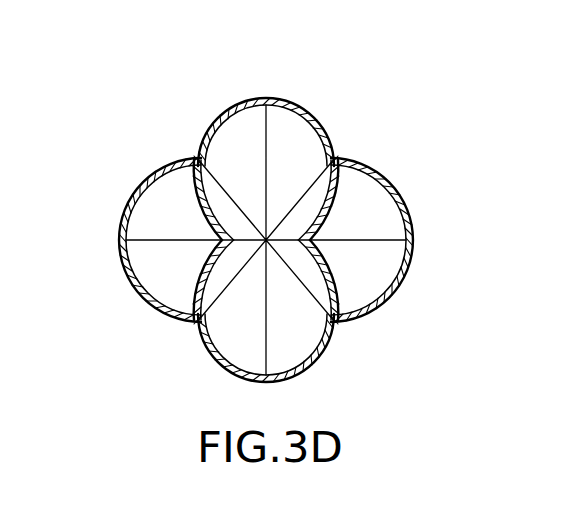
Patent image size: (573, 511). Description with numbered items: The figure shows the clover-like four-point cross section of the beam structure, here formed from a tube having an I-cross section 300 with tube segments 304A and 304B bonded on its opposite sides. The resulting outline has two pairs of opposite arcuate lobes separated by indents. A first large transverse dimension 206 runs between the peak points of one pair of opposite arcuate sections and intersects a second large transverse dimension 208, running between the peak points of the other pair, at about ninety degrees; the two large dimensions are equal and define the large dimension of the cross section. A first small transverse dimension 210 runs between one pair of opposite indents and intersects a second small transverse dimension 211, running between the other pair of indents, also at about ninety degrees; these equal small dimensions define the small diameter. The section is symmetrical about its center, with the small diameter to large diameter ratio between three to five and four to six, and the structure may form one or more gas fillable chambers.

The I-cross section 300 is at (265, 207).
The first large transverse dimension 206 is at (268, 172).
The second large transverse dimension 208 is at (358, 238).
The first small transverse dimension 210 is at (235, 207).
The second small transverse dimension 211 is at (303, 195).
The tube segment 304A is at (403, 217).
The tube segment 304B is at (128, 215).